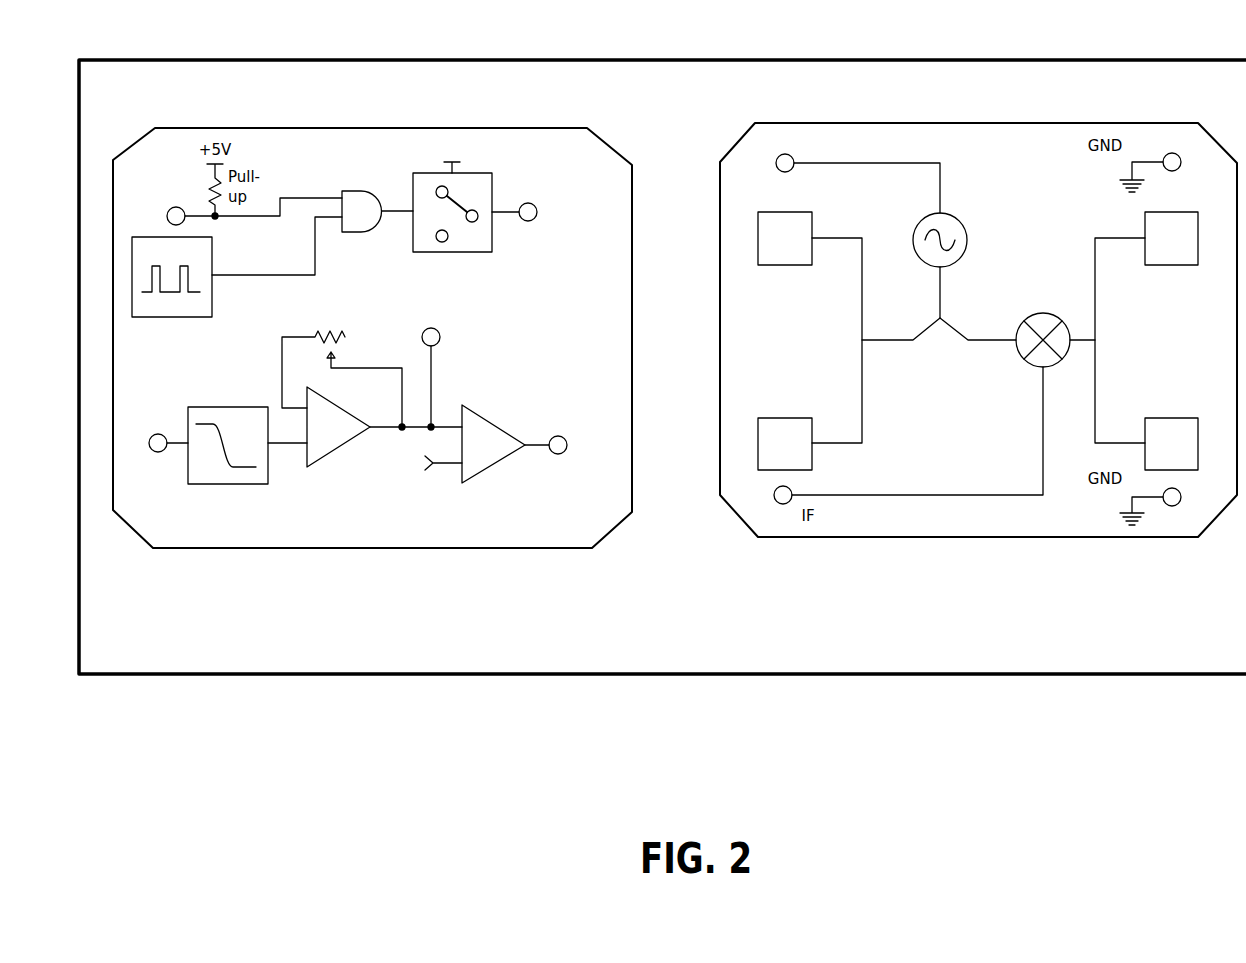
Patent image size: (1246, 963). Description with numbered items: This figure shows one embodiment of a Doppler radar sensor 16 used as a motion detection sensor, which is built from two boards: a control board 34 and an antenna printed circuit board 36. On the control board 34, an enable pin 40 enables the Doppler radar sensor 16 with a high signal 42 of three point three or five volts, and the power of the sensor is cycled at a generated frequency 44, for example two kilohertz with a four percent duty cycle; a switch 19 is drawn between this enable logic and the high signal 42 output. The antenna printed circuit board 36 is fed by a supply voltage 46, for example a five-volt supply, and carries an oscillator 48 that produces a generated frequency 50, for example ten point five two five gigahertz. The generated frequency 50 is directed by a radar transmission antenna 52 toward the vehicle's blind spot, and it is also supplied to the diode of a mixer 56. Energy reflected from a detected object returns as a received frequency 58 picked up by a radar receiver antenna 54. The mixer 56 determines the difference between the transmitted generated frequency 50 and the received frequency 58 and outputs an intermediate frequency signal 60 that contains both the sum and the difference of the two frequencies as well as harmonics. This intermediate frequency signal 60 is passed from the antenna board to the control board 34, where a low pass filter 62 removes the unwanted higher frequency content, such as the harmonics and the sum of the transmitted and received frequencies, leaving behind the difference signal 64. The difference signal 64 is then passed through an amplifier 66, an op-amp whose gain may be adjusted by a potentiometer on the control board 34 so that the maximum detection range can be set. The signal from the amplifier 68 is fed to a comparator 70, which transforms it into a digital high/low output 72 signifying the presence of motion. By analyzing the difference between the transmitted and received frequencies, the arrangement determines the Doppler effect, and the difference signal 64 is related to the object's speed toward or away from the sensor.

The Doppler radar sensor 16 is at (1167, 52).
The control board 34 is at (592, 553).
The antenna printed circuit board 36 is at (1195, 540).
The enable pin 40 is at (174, 207).
The generated frequency 44 is at (132, 280).
The switch 19 is at (495, 192).
The high signal 42 is at (505, 218).
The signal from the amplifier 68 is at (434, 328).
The intermediate frequency (IF) signal 60 is at (158, 434).
The low pass filter 62 is at (185, 470).
The difference signal 64 is at (277, 447).
The amplifier 66 is at (333, 450).
The comparator 70 is at (490, 420).
The digital high/low output 72 is at (560, 432).
The supply voltage 46 is at (785, 152).
The oscillator 48 is at (968, 240).
The generated frequency 50 is at (970, 355).
The radar transmission antenna 52 is at (790, 270).
The radar receiver antenna 54 is at (1157, 270).
The mixer 56 is at (1023, 325).
The received frequency 58 is at (1097, 297).